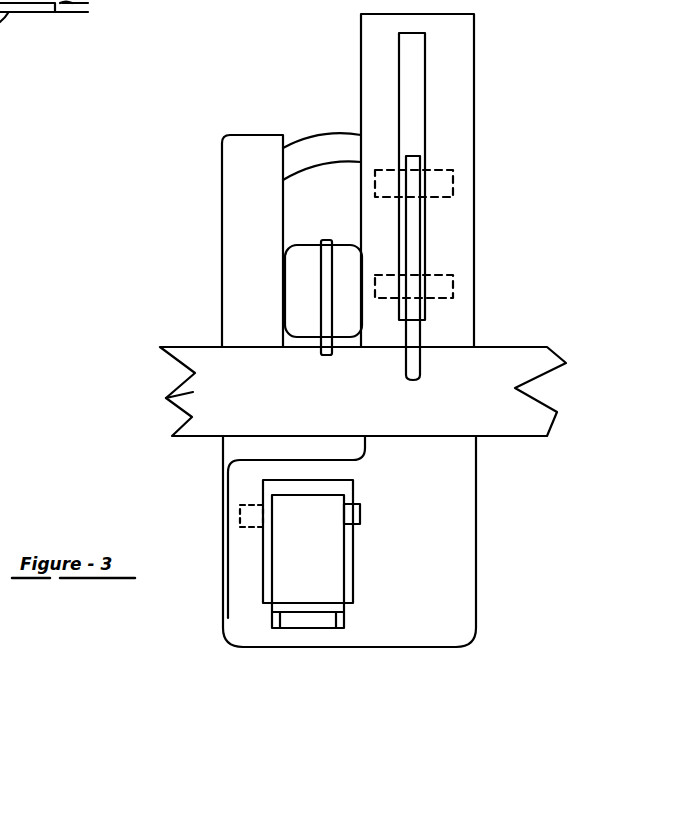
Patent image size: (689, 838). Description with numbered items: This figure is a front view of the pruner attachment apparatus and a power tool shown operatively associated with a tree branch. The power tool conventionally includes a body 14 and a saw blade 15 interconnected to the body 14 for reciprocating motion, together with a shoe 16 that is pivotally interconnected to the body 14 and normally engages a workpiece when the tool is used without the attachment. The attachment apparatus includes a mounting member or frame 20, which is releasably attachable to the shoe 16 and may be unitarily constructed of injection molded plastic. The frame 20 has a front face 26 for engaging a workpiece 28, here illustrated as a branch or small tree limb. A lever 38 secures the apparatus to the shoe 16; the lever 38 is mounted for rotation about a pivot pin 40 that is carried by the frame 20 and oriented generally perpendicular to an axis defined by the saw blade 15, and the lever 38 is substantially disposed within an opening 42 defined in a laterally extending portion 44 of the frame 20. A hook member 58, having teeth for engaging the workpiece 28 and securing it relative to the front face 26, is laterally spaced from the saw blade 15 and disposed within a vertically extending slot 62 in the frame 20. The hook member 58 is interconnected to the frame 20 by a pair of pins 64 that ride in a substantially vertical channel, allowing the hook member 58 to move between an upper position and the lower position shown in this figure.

The body 14 is at (332, 146).
The shoe 16 is at (243, 156).
The saw blade 15 is at (300, 262).
The vertically extending slot 62 is at (425, 53).
The pins 64 is at (436, 171).
The hook member 58 is at (412, 238).
The workpiece 28 is at (195, 395).
The front face 26 is at (412, 533).
The pivot pin 40 is at (265, 513).
The opening 42 is at (270, 566).
The laterally extending portion 44 is at (290, 647).
The lever 38 is at (313, 583).
The frame 20 is at (33, 14).